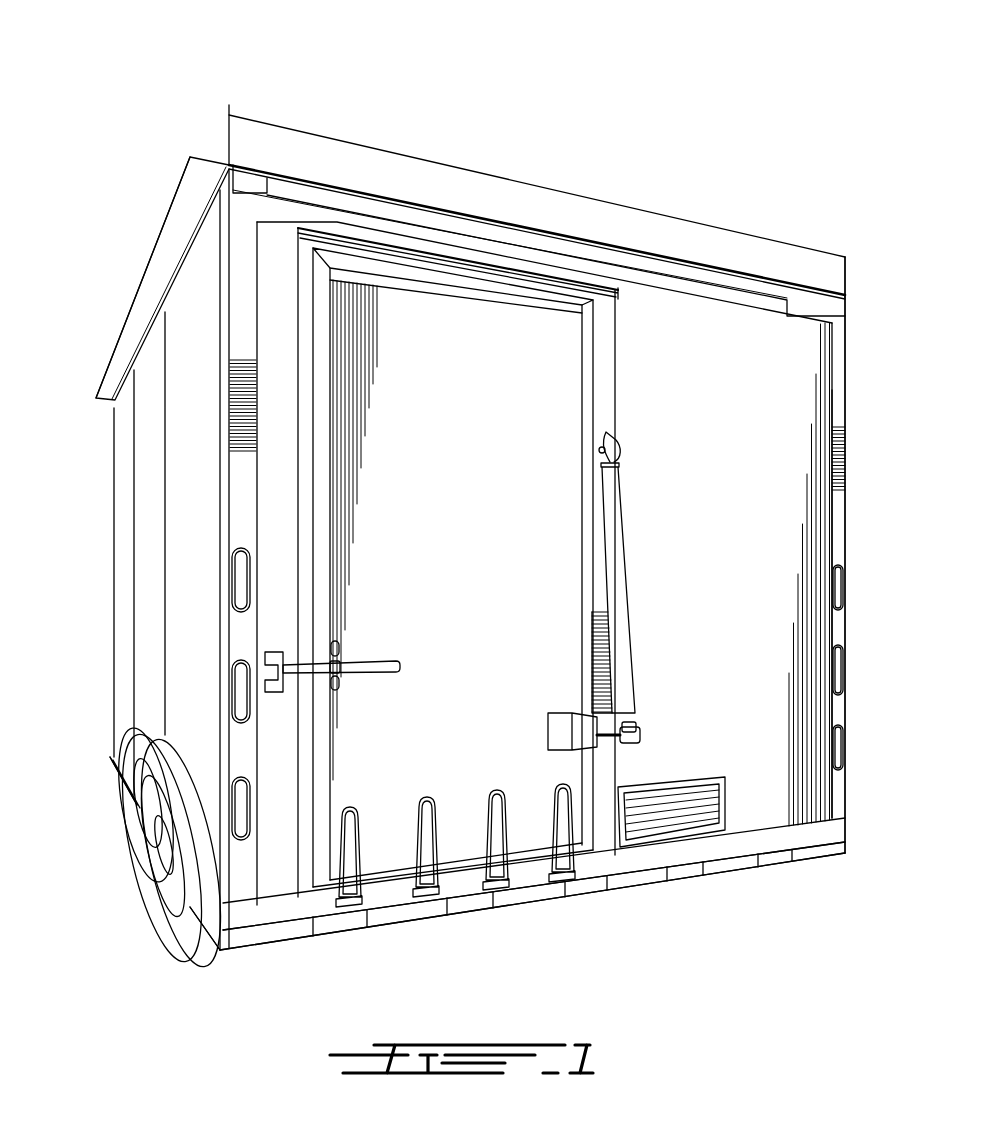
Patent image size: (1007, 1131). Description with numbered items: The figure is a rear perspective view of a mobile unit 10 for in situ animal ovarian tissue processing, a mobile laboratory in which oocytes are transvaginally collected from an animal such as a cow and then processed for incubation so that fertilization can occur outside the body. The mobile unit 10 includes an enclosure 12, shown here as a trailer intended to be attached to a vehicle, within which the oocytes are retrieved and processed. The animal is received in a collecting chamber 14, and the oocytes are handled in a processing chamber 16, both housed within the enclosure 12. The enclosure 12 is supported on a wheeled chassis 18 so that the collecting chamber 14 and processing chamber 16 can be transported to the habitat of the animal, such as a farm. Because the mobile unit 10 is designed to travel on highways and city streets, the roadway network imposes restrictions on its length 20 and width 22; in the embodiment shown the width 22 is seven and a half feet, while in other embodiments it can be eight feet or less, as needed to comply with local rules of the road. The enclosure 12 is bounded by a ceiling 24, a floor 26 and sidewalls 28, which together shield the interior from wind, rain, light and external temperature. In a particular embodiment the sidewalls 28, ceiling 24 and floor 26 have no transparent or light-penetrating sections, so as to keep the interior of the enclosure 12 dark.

The mobile unit 10 is at (138, 138).
The enclosure 12 is at (350, 190).
The collecting chamber 14 is at (150, 708).
The processing chamber 16 is at (848, 416).
The wheeled chassis 18 is at (180, 848).
The length 20 is at (148, 275).
The width 22 is at (538, 188).
The ceiling 24 is at (745, 282).
The floor 26 is at (755, 878).
The sidewalls 28 is at (150, 497).